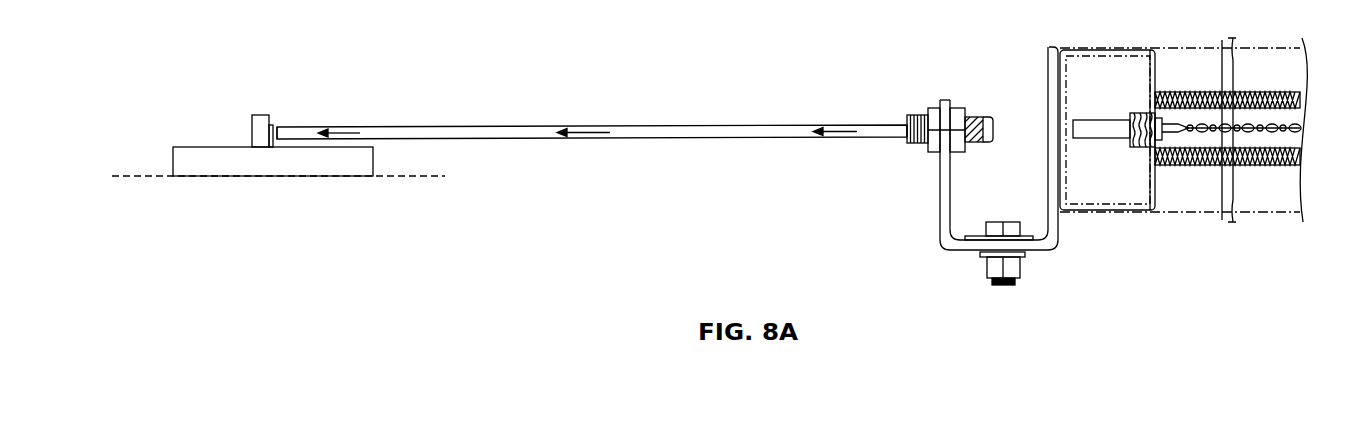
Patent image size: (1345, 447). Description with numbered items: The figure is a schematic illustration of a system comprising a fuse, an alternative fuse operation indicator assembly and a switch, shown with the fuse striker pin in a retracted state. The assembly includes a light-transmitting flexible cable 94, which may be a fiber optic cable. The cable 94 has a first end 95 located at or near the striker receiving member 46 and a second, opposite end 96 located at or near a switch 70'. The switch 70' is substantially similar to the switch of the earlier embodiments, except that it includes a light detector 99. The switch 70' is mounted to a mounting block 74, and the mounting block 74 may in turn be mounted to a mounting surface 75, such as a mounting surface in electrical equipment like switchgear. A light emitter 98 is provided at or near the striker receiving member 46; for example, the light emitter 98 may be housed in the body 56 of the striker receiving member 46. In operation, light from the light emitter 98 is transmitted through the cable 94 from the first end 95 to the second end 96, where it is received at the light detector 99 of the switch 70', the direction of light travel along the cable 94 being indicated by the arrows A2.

The striker receiving member 46 is at (972, 106).
The body 56 is at (917, 146).
The switch 70' is at (225, 124).
The mounting block 74 is at (213, 177).
The mounting surface 75 is at (417, 177).
The light-transmitting flexible cable 94 is at (533, 128).
The first end 95 is at (896, 130).
The second end 96 is at (300, 126).
The light emitter 98 is at (888, 146).
The light detector 99 is at (281, 148).
The arrows A2 is at (348, 128).